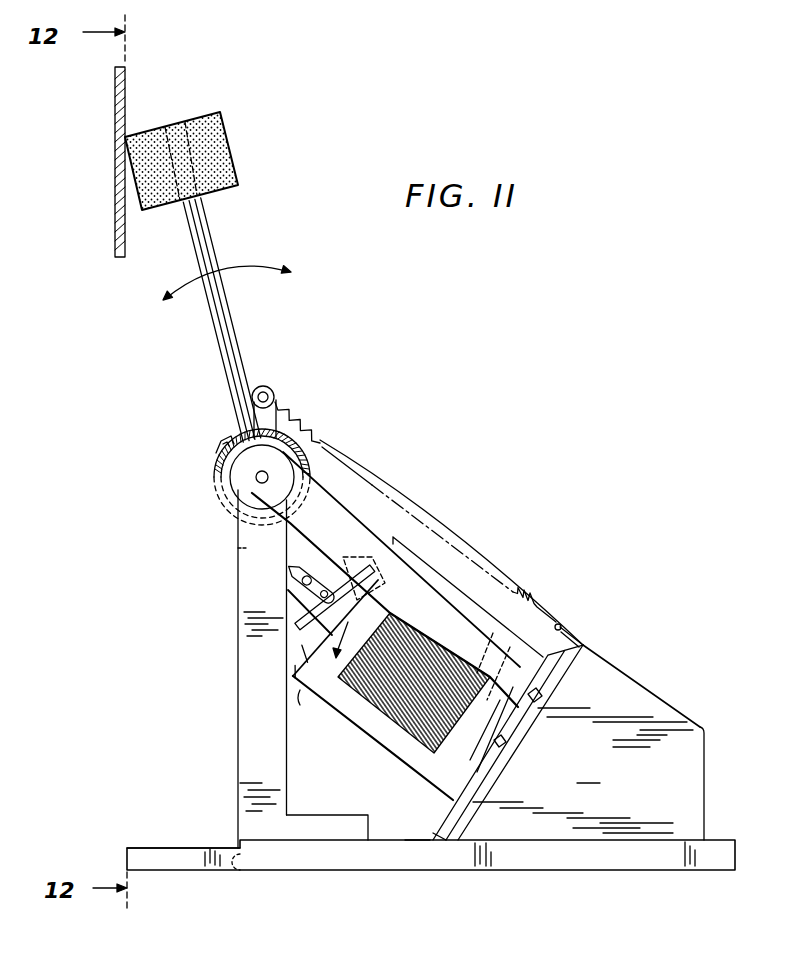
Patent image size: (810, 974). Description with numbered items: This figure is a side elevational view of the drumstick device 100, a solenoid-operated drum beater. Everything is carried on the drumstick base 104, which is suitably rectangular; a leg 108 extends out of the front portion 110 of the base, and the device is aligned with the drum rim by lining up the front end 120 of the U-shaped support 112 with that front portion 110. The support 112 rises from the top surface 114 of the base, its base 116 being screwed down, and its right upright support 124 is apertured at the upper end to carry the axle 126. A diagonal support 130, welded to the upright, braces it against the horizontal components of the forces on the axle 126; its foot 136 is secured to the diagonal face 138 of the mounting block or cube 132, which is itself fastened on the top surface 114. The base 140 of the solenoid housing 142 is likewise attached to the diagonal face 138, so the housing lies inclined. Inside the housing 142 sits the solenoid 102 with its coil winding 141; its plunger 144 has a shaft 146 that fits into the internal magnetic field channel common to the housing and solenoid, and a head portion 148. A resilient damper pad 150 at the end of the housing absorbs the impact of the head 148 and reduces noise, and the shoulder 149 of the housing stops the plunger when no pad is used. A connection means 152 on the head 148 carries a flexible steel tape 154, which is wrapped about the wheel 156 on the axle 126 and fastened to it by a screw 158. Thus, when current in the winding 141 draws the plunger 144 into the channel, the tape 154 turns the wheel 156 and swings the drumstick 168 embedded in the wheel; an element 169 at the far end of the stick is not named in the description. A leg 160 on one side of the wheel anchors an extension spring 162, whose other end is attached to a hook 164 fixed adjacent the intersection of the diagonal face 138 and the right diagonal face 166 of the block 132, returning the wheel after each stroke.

The drumstick device 100 is at (131, 664).
The solenoid 102 is at (388, 761).
The drumstick base 104 is at (592, 873).
The leg 108 is at (178, 826).
The front portion 110 is at (254, 877).
The U-shaped support 112 is at (229, 615).
The top surface 114 is at (417, 823).
The base of the support 116 is at (368, 806).
The front end of the support 120 is at (238, 713).
The right upright support 124 is at (263, 657).
The axle 126 is at (256, 481).
The diagonal support 130 is at (341, 527).
The mounting block or cube 132 is at (588, 774).
The foot or base of the diagonal support 136 is at (549, 687).
The diagonal face 138 is at (490, 771).
The base of the solenoid housing 140 is at (452, 819).
The coil winding 141 is at (410, 617).
The solenoid housing 142 is at (417, 683).
The plunger 144 is at (373, 738).
The shaft 146 is at (361, 633).
The head portion 148 is at (297, 632).
The shoulder 149 is at (290, 672).
The damper pad 150 is at (297, 652).
The connection means 152 is at (298, 594).
The tape 154 is at (240, 553).
The wheel 156 is at (230, 471).
The screw 158 is at (219, 440).
The leg 160 is at (277, 399).
The extension spring 162 is at (531, 580).
The hook 164 is at (569, 633).
The right diagonal face 166 is at (638, 678).
The drumstick 168 is at (220, 240).
The knob 169 is at (117, 143).